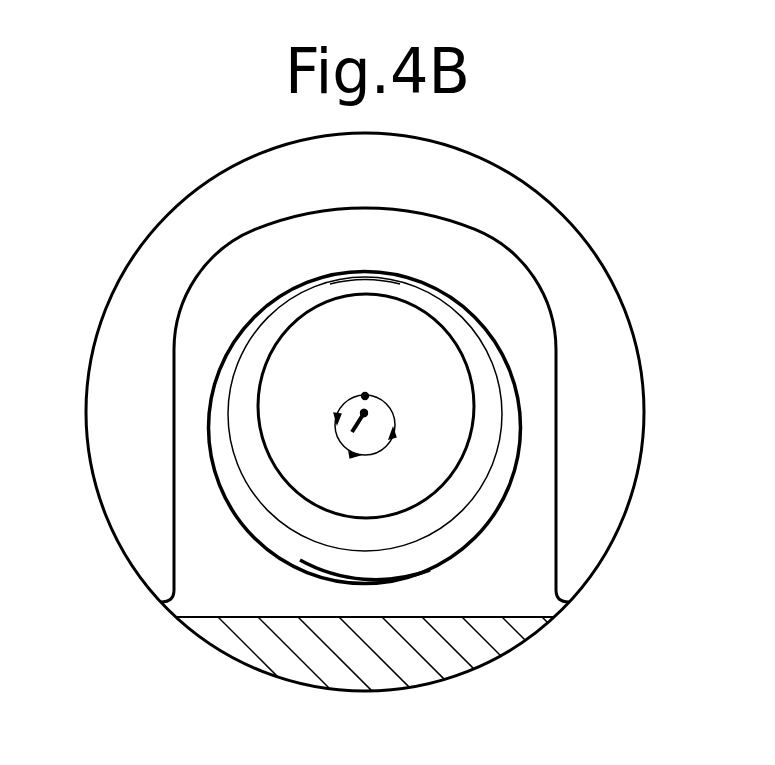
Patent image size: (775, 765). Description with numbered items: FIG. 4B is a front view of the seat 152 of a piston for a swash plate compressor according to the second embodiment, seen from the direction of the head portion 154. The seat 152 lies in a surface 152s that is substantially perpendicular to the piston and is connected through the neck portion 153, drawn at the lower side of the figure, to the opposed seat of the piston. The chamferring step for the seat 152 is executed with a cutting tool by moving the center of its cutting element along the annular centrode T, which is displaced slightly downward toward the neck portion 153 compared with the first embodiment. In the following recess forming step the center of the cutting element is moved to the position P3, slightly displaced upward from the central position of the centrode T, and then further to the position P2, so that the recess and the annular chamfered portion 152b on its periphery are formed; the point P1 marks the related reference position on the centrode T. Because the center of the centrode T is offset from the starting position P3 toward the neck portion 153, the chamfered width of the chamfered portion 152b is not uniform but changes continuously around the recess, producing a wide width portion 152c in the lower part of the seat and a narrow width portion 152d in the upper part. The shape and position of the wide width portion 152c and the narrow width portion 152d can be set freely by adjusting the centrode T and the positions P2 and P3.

The seat 152 is at (505, 330).
The chamfered portion 152b is at (482, 442).
The wide width portion 152c is at (395, 560).
The narrow width portion 152d is at (408, 293).
The surface 152s is at (530, 363).
The neck portion 153 is at (367, 693).
The head portion 154 is at (607, 523).
The centrode T is at (392, 402).
The point P1 is at (364, 379).
The position P2 is at (347, 432).
The position P3 is at (364, 413).